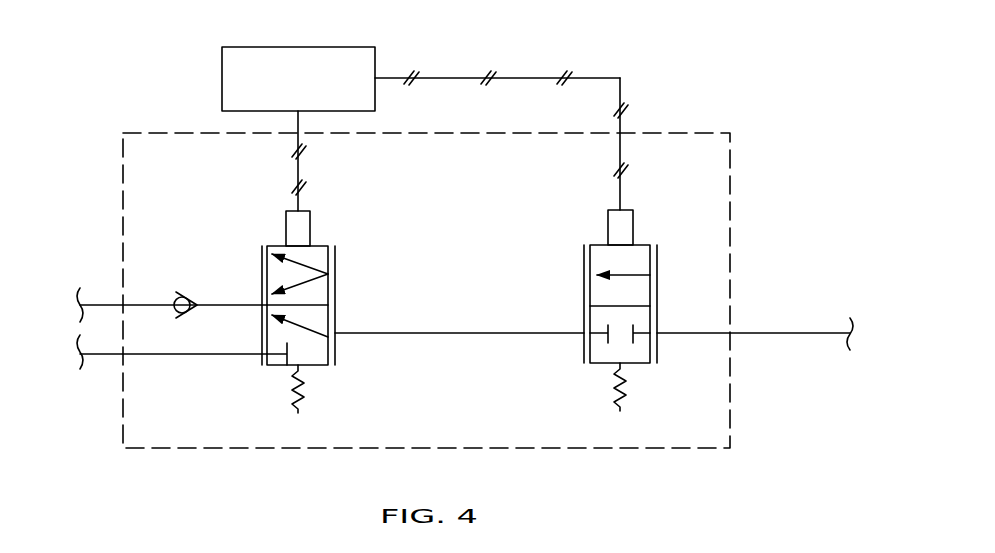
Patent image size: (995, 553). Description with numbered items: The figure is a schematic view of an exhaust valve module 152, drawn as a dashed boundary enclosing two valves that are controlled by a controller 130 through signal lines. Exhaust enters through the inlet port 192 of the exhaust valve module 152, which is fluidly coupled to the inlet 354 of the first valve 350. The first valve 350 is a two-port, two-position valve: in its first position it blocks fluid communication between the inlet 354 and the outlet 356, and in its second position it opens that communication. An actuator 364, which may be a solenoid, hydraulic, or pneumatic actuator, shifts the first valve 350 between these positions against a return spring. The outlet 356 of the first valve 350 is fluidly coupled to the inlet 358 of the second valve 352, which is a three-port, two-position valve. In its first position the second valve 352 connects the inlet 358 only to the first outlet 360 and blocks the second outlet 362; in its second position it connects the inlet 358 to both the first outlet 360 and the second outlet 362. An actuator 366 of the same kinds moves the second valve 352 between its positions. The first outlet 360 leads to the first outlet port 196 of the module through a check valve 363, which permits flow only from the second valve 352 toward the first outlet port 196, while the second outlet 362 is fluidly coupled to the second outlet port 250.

The controller 130 is at (281, 90).
The exhaust valve module 152 is at (756, 174).
The inlet port 192 is at (730, 333).
The first outlet port 196 is at (123, 305).
The second outlet port 250 is at (123, 354).
The first valve 350 is at (560, 236).
The second valve 352 is at (250, 224).
The inlet 354 is at (657, 333).
The outlet 356 is at (584, 333).
The inlet 358 is at (335, 335).
The first outlet 360 is at (262, 304).
The second outlet 362 is at (262, 354).
The check valve 363 is at (193, 291).
The actuator 364 is at (633, 215).
The actuator 366 is at (310, 216).